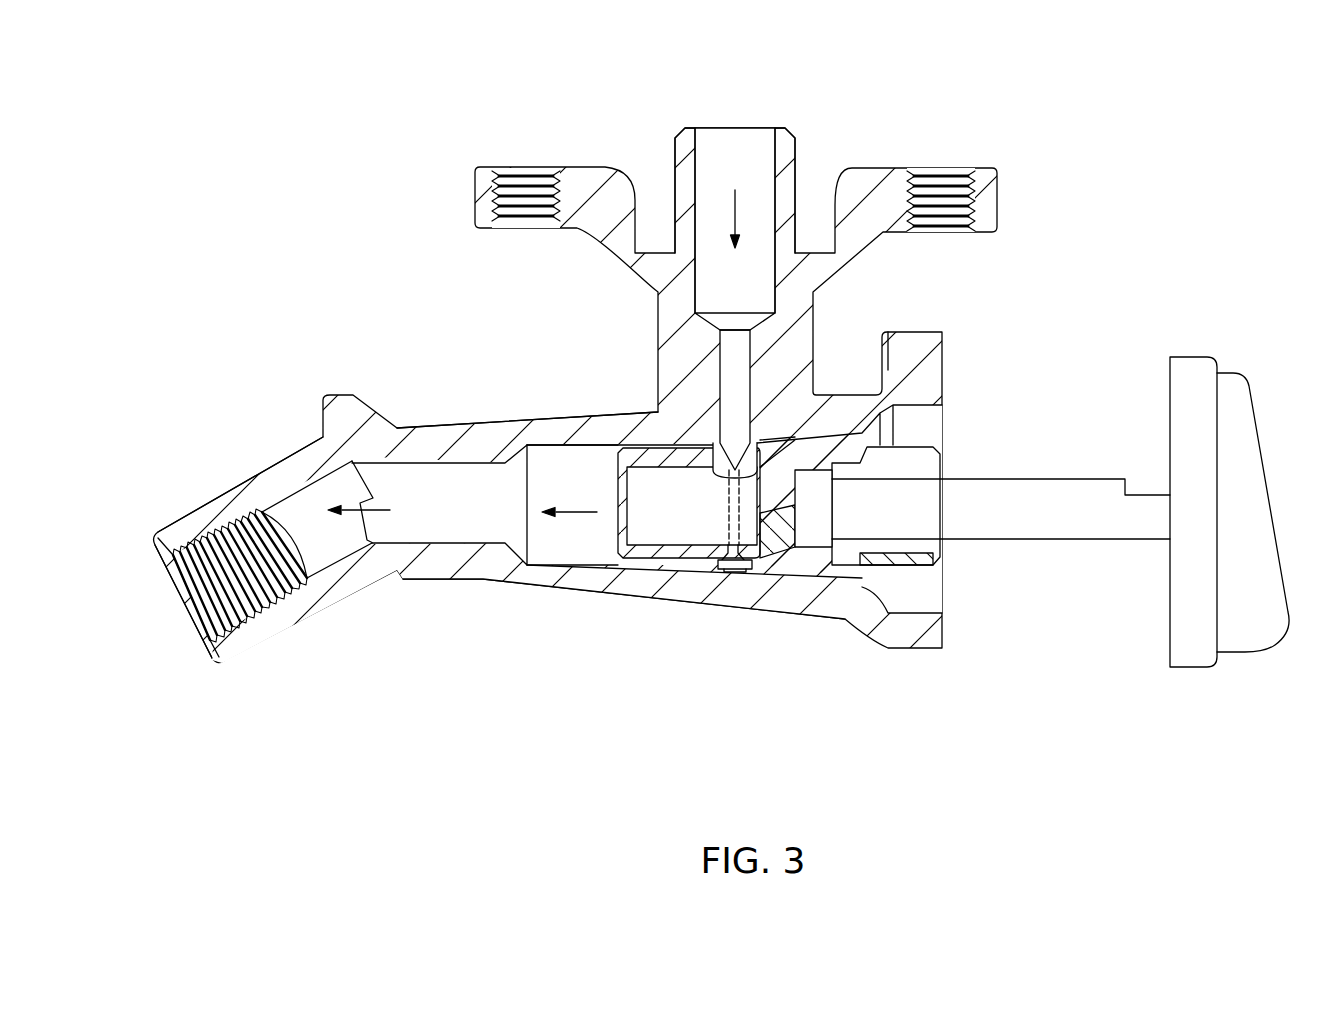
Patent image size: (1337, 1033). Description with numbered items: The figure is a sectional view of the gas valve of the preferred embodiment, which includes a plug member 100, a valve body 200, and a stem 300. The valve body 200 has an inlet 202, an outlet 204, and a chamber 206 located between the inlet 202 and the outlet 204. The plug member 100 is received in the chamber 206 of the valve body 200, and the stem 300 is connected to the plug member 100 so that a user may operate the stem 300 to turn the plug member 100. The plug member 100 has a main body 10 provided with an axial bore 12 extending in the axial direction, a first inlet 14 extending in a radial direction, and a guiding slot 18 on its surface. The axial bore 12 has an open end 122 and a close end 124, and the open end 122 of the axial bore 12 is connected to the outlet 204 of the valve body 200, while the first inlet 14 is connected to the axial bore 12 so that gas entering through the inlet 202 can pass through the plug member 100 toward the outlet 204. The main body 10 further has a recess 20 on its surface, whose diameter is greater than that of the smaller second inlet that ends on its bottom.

The main body 10 is at (803, 574).
The axial bore 12 is at (663, 530).
The first inlet 14 is at (755, 455).
The guiding slot 18 is at (728, 498).
The recess 20 is at (733, 572).
The plug member 100 is at (832, 576).
The open end 122 is at (617, 513).
The close end 124 is at (764, 522).
The valve body 200 is at (627, 590).
The inlet 202 is at (747, 157).
The outlet 204 is at (293, 520).
The chamber 206 is at (555, 540).
The stem 300 is at (1044, 545).